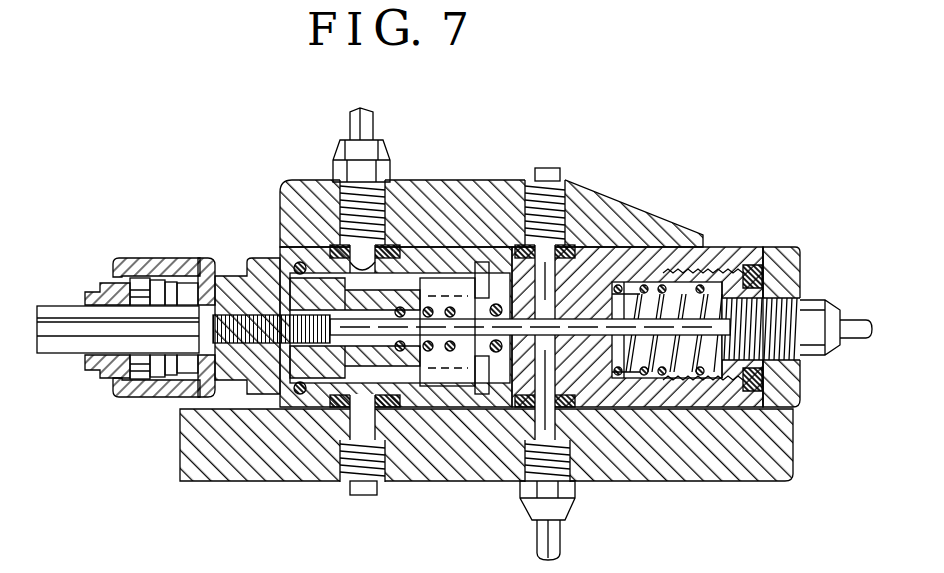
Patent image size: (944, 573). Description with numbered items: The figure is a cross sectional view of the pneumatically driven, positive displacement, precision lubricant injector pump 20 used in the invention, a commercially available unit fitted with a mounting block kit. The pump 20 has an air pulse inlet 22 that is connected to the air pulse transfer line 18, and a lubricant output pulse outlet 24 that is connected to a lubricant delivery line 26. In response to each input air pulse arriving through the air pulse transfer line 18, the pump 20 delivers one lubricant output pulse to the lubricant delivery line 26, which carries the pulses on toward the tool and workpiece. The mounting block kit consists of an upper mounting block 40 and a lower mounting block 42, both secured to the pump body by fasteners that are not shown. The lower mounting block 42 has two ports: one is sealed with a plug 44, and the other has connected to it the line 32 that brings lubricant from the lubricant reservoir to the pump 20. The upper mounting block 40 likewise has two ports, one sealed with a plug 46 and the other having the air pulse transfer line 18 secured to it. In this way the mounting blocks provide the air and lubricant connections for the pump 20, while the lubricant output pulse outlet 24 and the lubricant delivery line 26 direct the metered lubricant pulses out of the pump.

The air pulse transfer line 18 is at (372, 124).
The lubricant injector pump 20 is at (258, 262).
The air pulse inlet 22 is at (385, 180).
The lubricant output pulse outlet 24 is at (784, 296).
The lubricant delivery line 26 is at (852, 345).
The line 32 is at (560, 540).
The upper mounting block 40 is at (636, 208).
The lower mounting block 42 is at (788, 462).
The plug 44 is at (378, 490).
The plug 46 is at (540, 170).